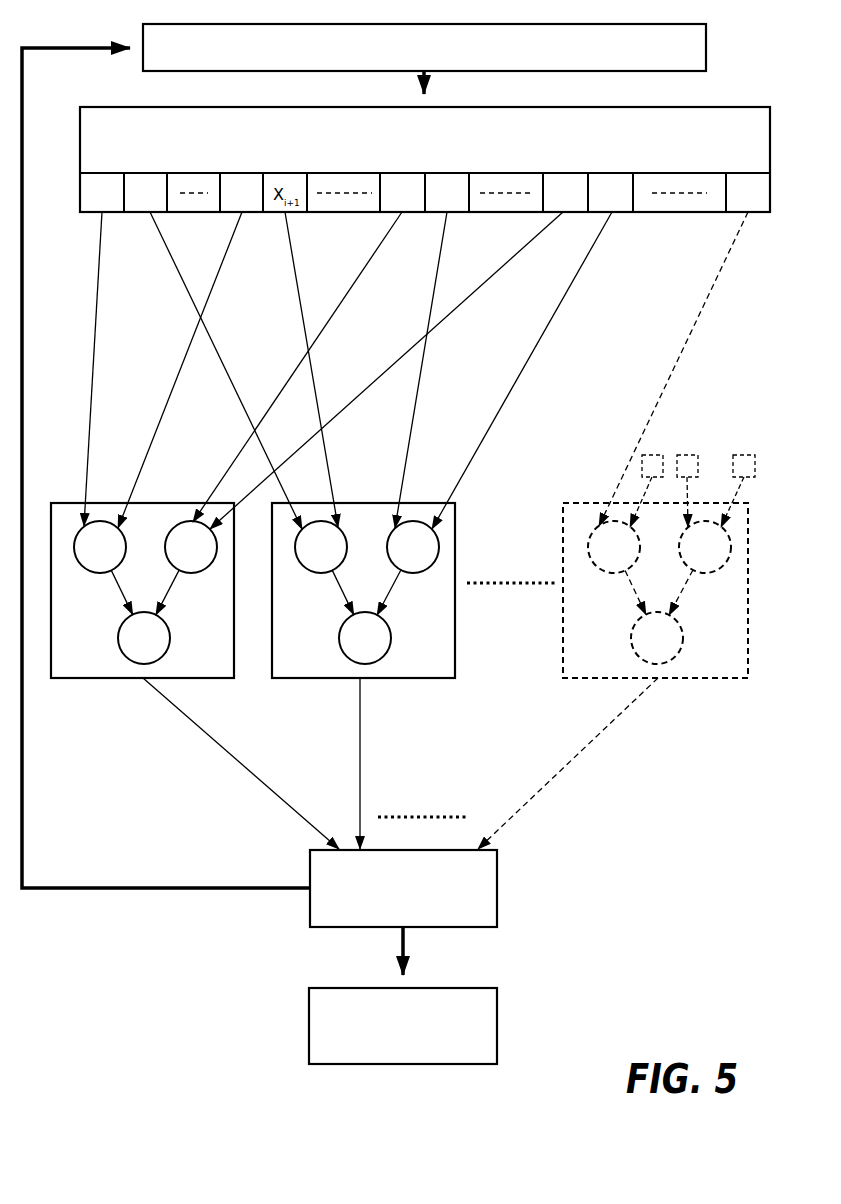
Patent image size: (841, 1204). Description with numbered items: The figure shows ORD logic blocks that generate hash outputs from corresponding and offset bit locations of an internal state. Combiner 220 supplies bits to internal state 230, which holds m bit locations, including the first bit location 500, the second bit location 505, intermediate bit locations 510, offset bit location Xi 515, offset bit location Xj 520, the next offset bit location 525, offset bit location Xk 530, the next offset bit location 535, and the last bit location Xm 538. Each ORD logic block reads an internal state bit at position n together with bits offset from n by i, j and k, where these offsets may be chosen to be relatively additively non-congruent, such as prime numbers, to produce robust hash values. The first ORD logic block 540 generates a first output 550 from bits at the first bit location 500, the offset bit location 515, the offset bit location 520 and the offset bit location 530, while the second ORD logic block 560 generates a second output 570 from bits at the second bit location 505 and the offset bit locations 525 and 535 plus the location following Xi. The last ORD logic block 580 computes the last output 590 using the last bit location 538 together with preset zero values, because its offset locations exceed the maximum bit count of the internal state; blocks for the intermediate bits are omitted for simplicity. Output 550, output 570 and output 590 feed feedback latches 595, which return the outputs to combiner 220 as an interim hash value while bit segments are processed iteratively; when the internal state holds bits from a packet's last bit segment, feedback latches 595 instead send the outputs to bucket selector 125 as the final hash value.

The combiner 220 is at (424, 47).
The internal state 230 is at (425, 159).
The bit location X0 500 is at (87, 173).
The bit location X1 505 is at (132, 173).
The bit locations 510 is at (205, 176).
The bit location Xi 515 is at (243, 173).
The bit location Xj 520 is at (403, 173).
The bit location Xj+1 525 is at (447, 173).
The bit location Xk 530 is at (565, 173).
The bit location Xk+1 535 is at (610, 173).
The bit location Xm 538 is at (748, 173).
The ORD logic block 0 540 is at (127, 678).
The output 0 550 is at (240, 766).
The ORD logic block 1 560 is at (383, 678).
The output 1 570 is at (359, 720).
The ORD logic block m 580 is at (682, 678).
The output m 590 is at (555, 768).
The feedback latches 595 is at (403, 888).
The bucket selector 125 is at (403, 1026).